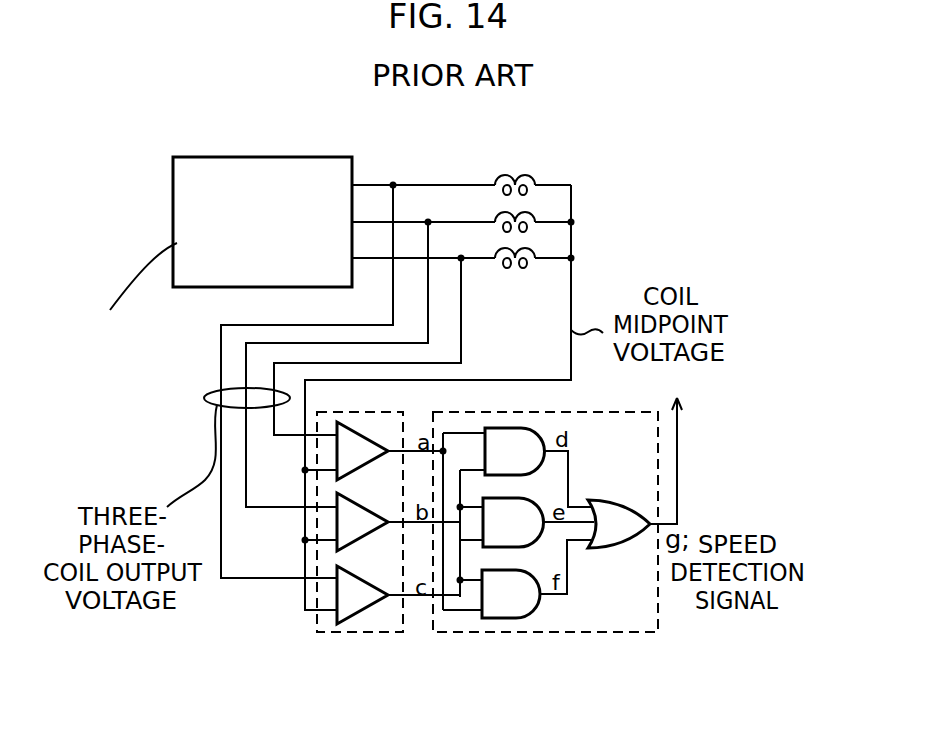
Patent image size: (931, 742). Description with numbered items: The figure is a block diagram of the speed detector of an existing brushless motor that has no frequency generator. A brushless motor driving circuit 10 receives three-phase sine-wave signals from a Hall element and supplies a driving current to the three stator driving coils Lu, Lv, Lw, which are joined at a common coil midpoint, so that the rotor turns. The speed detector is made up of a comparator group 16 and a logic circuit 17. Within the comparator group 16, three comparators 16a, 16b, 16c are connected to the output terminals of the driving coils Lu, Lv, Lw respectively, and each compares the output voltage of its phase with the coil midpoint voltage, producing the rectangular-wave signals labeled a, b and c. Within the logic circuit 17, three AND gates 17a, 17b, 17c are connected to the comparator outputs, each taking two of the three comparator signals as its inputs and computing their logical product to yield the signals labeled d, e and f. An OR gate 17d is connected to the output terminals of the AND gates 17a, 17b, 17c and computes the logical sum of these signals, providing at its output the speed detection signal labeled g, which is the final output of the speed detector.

The brushless motor driving circuit 10 is at (335, 157).
The driving coil Lu is at (535, 178).
The driving coil Lv is at (503, 212).
The driving coil Lw is at (520, 268).
The comparator group 16 is at (391, 558).
The comparator 16a is at (355, 438).
The comparator 16b is at (358, 497).
The comparator 16c is at (365, 570).
The logic circuit 17 is at (562, 552).
The AND gate 17a is at (527, 437).
The AND gate 17b is at (522, 484).
The AND gate 17c is at (524, 562).
The OR gate 17d is at (612, 500).